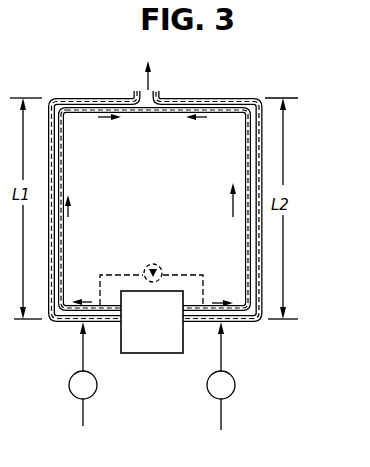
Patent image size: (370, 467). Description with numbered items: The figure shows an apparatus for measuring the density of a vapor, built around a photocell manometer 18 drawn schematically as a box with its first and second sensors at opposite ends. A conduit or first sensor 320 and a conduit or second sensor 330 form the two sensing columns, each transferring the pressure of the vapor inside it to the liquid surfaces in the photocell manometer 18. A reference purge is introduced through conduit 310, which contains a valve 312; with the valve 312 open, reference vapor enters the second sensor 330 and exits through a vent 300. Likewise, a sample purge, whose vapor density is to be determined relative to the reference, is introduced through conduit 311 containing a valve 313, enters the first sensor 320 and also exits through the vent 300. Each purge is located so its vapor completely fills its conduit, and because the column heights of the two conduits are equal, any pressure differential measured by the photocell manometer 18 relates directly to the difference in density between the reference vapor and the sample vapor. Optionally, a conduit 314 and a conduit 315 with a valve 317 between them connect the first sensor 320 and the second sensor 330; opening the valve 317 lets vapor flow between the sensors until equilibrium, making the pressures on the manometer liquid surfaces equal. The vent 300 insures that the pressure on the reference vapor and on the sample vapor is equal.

The vent 300 is at (161, 83).
The first sensor conduit 320 is at (244, 172).
The second sensor conduit 330 is at (63, 180).
The conduit 314 is at (133, 270).
The valve 317 is at (163, 266).
The conduit 315 is at (194, 272).
The photocell manometer 18 is at (165, 333).
The conduit 310 is at (80, 352).
The conduit 311 is at (222, 355).
The valve 312 is at (97, 386).
The valve 313 is at (235, 386).